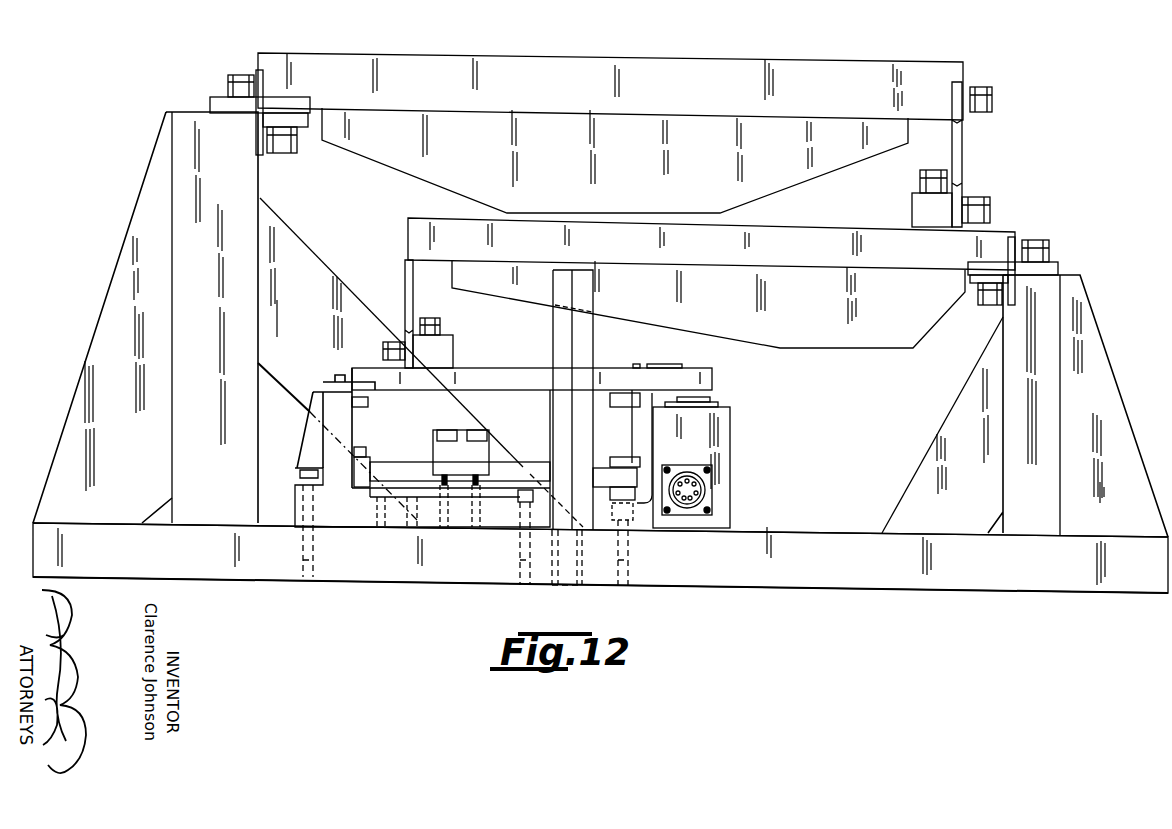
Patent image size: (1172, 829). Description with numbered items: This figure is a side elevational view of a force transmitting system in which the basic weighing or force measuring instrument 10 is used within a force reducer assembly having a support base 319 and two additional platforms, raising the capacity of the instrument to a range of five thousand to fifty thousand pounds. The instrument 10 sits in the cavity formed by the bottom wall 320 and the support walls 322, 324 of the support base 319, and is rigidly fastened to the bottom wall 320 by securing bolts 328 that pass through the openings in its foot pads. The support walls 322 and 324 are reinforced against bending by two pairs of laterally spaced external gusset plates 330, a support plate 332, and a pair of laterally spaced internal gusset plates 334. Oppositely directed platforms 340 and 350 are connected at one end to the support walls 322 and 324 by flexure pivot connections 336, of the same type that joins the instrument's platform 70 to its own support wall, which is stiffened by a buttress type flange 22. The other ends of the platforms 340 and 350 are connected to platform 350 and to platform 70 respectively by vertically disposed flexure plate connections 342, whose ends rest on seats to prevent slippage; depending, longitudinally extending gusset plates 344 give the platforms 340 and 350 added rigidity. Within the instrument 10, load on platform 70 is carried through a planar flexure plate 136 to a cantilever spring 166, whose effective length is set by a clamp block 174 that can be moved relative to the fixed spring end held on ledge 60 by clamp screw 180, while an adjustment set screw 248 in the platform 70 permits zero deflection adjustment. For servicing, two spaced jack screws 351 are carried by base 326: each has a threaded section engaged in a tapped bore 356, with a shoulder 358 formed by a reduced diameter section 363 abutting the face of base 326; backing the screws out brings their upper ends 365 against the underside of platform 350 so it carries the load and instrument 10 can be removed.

The force measuring instrument 10 is at (747, 433).
The buttress type flange 22 is at (355, 424).
The ledge 60 is at (352, 485).
The platform 70 is at (517, 386).
The flexure plate 136 is at (630, 432).
The cantilever spring 166 is at (523, 467).
The clamp block 174 is at (480, 432).
The clamp screw 180 is at (375, 442).
The adjustment set screw 248 is at (637, 367).
The support base 319 is at (768, 588).
The bottom wall 320 is at (813, 529).
The support wall 322 is at (170, 425).
The support wall 324 is at (1055, 450).
The base 326 is at (878, 574).
The securing bolts 328 is at (313, 552).
The external gusset plates 330 is at (145, 235).
The support plate 332 is at (338, 262).
The internal gusset plates 334 is at (946, 442).
The flexure pivot connections 336 is at (240, 65).
The platform 340 is at (527, 63).
The flexure plate connections 342 is at (966, 159).
The gusset plates 344 is at (371, 142).
The platform 350 is at (853, 235).
The jack screws 351 is at (600, 301).
The tapped bores 356 is at (547, 569).
The shoulder 358 is at (582, 584).
The reduced diameter section 363 is at (578, 532).
The upper ends 365 is at (586, 268).